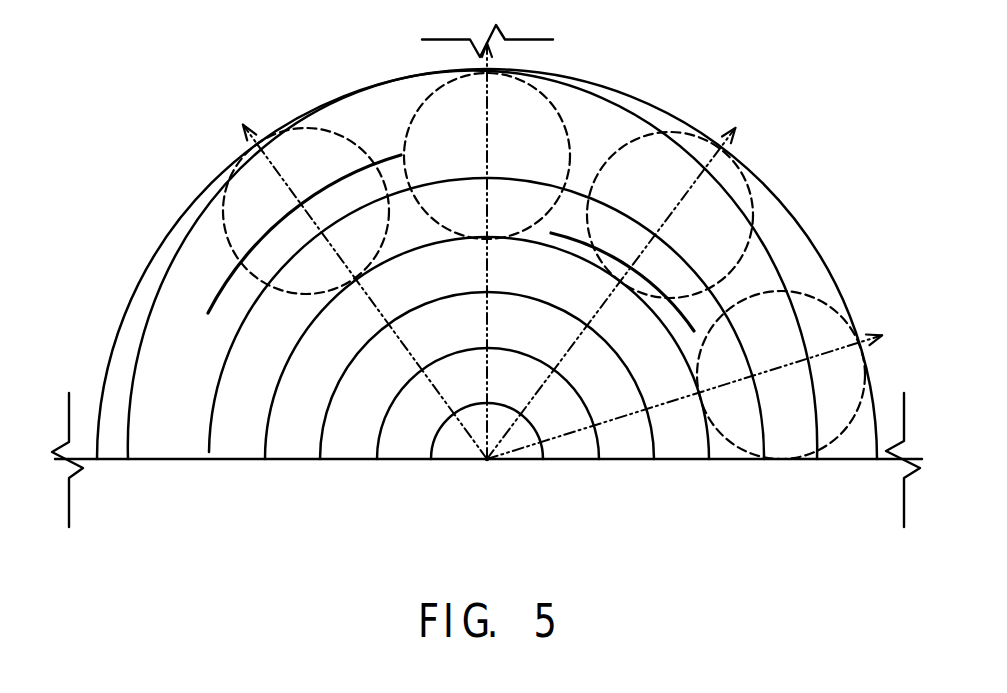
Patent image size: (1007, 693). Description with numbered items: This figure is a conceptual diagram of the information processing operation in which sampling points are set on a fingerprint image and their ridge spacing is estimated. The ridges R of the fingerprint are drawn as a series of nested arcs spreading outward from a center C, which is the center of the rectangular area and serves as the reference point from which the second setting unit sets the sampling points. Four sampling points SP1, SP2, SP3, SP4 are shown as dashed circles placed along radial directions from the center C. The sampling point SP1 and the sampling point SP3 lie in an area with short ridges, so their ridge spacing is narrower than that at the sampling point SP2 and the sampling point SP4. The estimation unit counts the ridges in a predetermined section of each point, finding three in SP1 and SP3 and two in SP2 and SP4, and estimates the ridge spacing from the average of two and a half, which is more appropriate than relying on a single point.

The radius region / arc pattern R is at (170, 233).
The center C is at (487, 461).
The sampling point SP1 is at (298, 124).
The sampling point SP2 is at (540, 82).
The sampling point SP3 is at (753, 166).
The sampling point SP4 is at (813, 298).